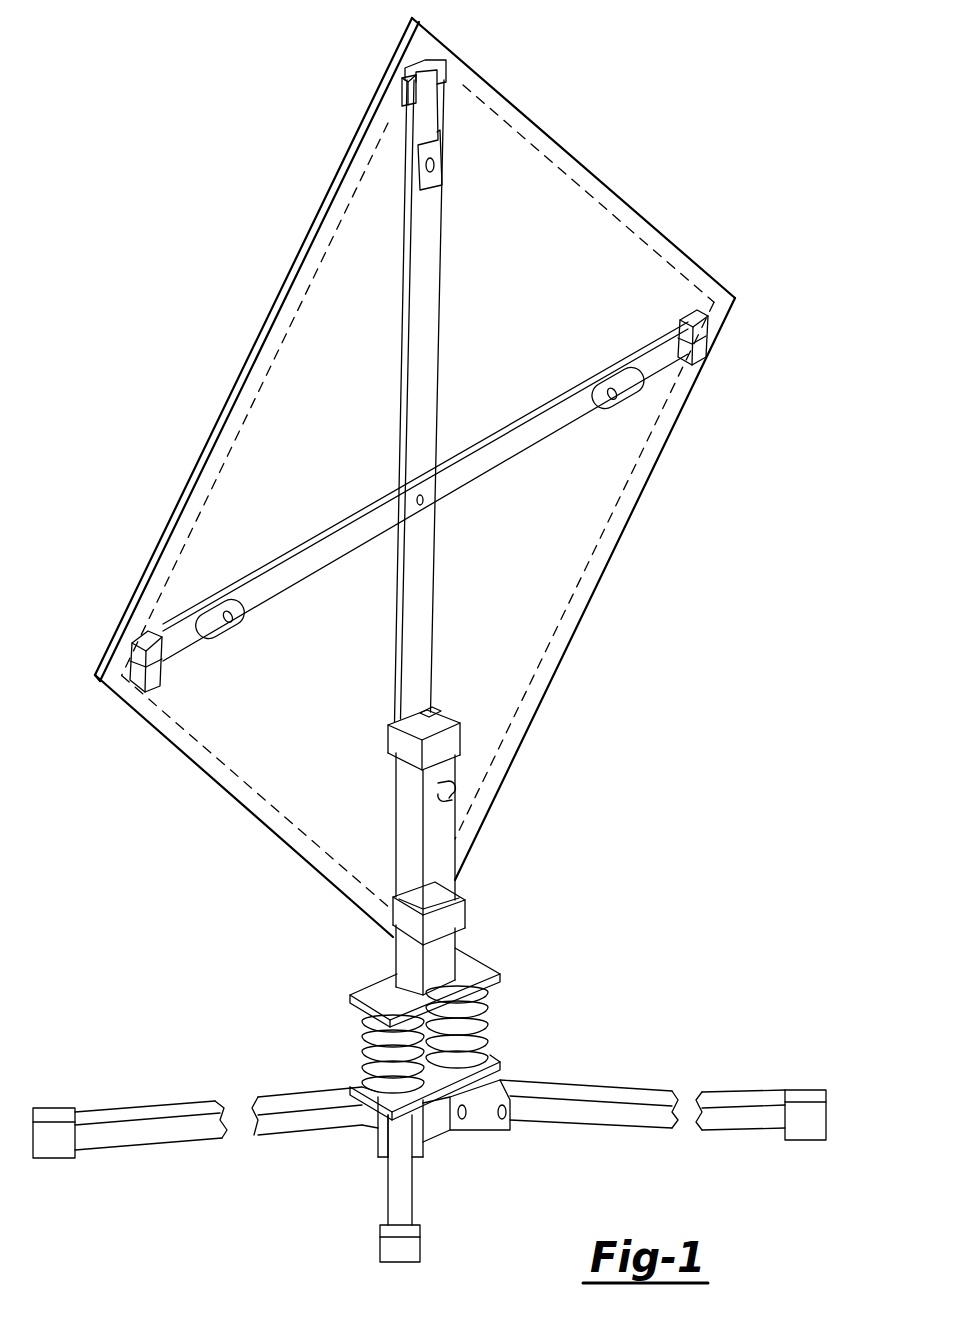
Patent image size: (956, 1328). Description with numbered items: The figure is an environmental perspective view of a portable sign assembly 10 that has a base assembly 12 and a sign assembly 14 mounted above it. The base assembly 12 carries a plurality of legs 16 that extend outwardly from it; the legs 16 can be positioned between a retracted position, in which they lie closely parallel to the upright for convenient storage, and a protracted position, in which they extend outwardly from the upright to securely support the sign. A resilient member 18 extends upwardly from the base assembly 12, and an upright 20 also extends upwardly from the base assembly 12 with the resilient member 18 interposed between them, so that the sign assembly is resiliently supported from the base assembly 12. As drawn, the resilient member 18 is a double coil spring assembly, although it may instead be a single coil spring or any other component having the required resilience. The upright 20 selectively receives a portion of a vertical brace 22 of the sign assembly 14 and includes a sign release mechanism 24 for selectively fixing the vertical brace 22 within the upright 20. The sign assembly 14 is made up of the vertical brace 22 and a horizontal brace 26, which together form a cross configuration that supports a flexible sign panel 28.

The portable sign assembly 10 is at (220, 843).
The base assembly 12 is at (568, 981).
The sign assembly 14 is at (188, 343).
The legs 16 is at (152, 1113).
The resilient member 18 is at (365, 1043).
The upright 20 is at (445, 867).
The vertical brace 22 is at (434, 610).
The sign release mechanism 24 is at (372, 822).
The horizontal brace 26 is at (477, 470).
The flexible sign panel 28 is at (590, 220).